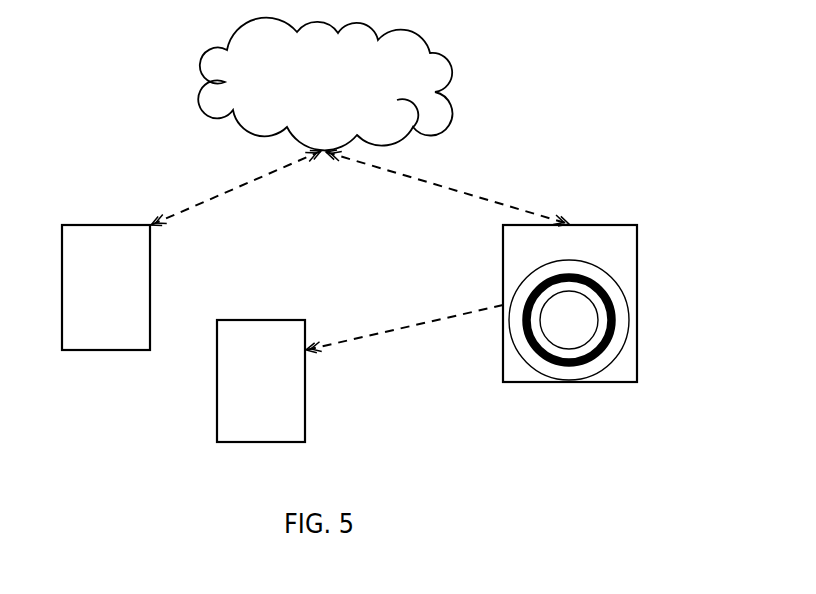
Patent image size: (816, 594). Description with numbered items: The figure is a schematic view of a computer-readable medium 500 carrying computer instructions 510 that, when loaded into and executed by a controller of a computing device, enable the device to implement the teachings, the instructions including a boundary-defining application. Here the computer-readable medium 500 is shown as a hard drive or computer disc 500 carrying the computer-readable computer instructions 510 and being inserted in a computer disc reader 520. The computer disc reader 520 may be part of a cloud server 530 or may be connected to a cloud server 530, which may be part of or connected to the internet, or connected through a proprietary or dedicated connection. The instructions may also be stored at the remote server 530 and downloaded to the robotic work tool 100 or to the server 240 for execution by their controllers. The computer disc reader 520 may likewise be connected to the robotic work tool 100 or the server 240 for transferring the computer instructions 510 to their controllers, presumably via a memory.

The cloud server 530 is at (325, 84).
The robotic work tool 100 is at (183, 333).
The server 240 is at (183, 333).
The computer disc reader 520 is at (570, 303).
The computer-readable medium 500 is at (628, 298).
The computer instructions 510 is at (615, 343).